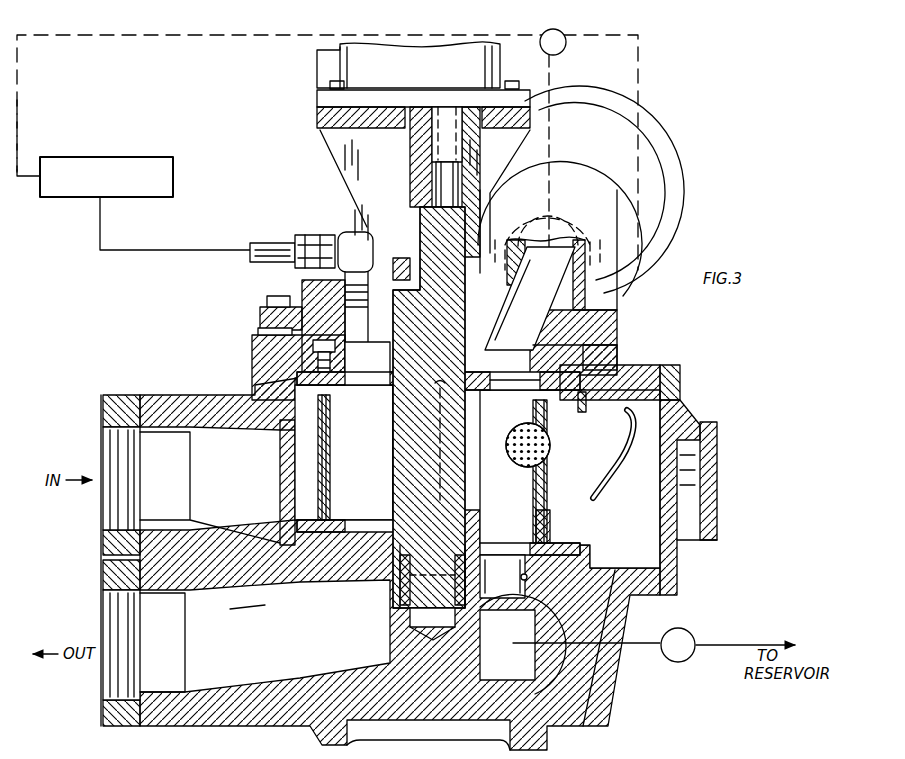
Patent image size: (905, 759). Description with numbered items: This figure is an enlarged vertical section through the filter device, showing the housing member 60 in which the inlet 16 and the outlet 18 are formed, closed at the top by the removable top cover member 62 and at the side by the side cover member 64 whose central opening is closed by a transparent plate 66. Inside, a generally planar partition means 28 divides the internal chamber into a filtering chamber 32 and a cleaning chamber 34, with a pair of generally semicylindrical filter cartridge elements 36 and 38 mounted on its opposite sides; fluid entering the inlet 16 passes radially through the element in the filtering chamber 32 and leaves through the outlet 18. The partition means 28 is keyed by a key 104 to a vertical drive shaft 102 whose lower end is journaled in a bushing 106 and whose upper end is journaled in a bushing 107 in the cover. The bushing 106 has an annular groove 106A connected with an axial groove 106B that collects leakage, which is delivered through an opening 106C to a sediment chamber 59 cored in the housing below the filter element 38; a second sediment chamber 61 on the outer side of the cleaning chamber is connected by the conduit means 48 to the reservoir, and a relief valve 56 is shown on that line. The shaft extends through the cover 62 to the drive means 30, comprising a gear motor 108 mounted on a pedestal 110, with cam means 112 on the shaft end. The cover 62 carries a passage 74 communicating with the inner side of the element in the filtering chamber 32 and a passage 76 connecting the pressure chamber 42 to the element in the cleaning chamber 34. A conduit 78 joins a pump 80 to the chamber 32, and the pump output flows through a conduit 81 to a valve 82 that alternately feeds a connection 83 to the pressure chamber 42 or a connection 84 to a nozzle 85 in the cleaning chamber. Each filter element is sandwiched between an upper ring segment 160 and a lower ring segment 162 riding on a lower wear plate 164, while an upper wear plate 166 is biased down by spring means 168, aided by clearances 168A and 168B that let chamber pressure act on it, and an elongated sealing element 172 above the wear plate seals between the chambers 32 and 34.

The inlet 16 is at (108, 430).
The outlet 18 is at (115, 592).
The partition means 28 is at (395, 443).
The drive means 30 is at (548, 80).
The filtering chamber 32 is at (372, 482).
The cleaning chamber 34 is at (522, 493).
The filter cartridge element 36 is at (332, 418).
The filter cartridge element 38 is at (580, 522).
The pressure chamber 42 is at (665, 135).
The conduit means 48 is at (727, 643).
The relief valve 56 is at (680, 630).
The sediment chamber 59 is at (528, 578).
The housing member 60 is at (235, 724).
The second sediment chamber 61 is at (600, 675).
The top cover member 62 is at (258, 310).
The side cover member 64 is at (679, 380).
The transparent plate 66 is at (718, 446).
The passage 74 is at (362, 322).
The passage 76 is at (540, 334).
The conduit 78 is at (172, 250).
The pump 80 is at (128, 157).
The conduit 81 is at (60, 40).
The valve 82 is at (327, 149).
The connection 83 is at (552, 144).
The connection 84 is at (642, 94).
The nozzle 85 is at (612, 480).
The vertical drive shaft 102 is at (415, 488).
The key 104 is at (445, 482).
The bushing 106 is at (408, 600).
The annular groove 106A is at (410, 590).
The axial groove 106B is at (468, 585).
The opening 106C is at (478, 548).
The bushing 107 is at (467, 323).
The gear motor 108 is at (500, 57).
The pedestal 110 is at (313, 118).
The cam means 112 is at (412, 268).
The upper ring segment 160 is at (295, 386).
The lower ring segment 162 is at (296, 530).
The lower wear plate 164 is at (245, 641).
The upper wear plate 166 is at (337, 380).
The spring means 168 is at (313, 345).
The clearance 168A is at (575, 395).
The clearance 168B is at (598, 370).
The sealing element 172 is at (482, 370).